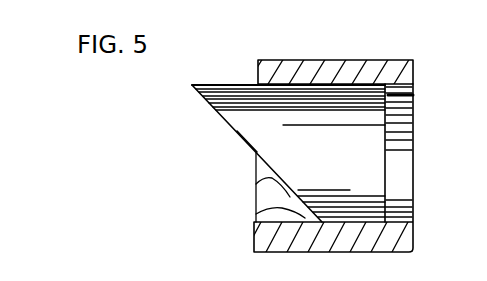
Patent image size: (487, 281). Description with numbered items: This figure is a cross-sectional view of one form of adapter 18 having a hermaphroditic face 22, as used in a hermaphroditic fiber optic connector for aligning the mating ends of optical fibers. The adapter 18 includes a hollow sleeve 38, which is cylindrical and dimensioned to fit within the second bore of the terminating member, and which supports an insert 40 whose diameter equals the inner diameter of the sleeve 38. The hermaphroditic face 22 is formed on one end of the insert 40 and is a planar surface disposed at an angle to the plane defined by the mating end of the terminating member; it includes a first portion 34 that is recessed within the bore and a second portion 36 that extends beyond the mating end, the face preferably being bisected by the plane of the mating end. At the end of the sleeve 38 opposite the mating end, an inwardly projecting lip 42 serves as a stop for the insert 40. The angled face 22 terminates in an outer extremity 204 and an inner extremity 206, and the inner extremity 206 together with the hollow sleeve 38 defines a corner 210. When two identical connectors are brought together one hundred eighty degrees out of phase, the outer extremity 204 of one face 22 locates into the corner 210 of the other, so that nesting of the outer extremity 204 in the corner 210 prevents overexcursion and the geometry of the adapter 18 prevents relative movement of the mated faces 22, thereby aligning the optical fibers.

The adapter means 18 is at (222, 172).
The hermaphroditic face 22 is at (232, 134).
The first portion 34 is at (256, 184).
The second portion 36 is at (212, 106).
The hollow sleeve 38 is at (312, 70).
The insert 40 is at (368, 195).
The inwardly projecting lip 42 is at (413, 95).
The outer extremity 204 is at (193, 85).
The inner extremity 206 is at (320, 222).
The corner 210 is at (256, 214).